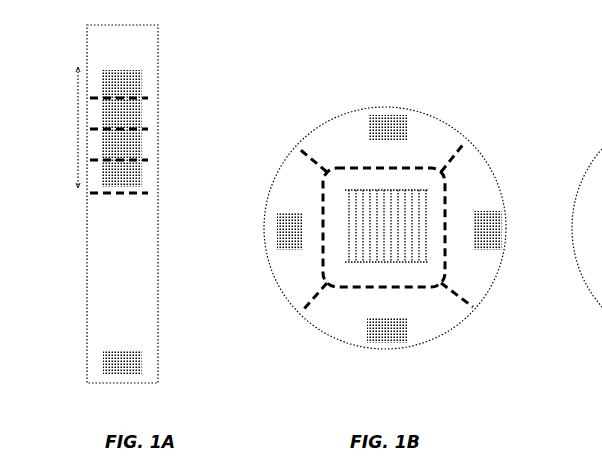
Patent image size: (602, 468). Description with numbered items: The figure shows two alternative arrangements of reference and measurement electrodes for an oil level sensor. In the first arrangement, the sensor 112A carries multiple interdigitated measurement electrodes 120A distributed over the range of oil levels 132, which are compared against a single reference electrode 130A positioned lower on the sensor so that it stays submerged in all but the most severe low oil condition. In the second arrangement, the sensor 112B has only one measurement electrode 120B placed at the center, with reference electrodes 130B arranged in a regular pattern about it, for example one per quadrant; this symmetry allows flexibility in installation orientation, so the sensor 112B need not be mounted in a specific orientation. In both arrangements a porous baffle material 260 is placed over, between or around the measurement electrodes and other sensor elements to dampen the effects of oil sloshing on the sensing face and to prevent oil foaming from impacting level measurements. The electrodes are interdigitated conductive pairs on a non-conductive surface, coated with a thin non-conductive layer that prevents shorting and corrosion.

In FIG. 1A, the sensor 112A is at (158, 38).
In FIG. 1A, the measurement electrodes 120A is at (167, 72).
In FIG. 1A, the range of oil levels 132 is at (79, 100).
In FIG. 1A, the porous baffle material 260 is at (148, 160).
In FIG. 1B, the porous baffle material 260 is at (347, 288).
In FIG. 1A, the reference electrode 130A is at (138, 372).
In FIG. 1B, the sensor 112B is at (440, 113).
In FIG. 1B, the measurement electrode 120B is at (427, 190).
In FIG. 1B, the reference electrodes 130B is at (368, 128).